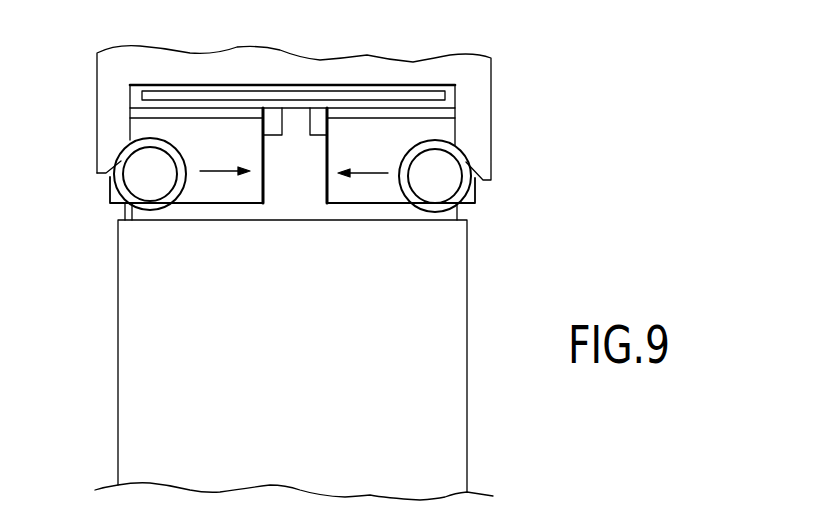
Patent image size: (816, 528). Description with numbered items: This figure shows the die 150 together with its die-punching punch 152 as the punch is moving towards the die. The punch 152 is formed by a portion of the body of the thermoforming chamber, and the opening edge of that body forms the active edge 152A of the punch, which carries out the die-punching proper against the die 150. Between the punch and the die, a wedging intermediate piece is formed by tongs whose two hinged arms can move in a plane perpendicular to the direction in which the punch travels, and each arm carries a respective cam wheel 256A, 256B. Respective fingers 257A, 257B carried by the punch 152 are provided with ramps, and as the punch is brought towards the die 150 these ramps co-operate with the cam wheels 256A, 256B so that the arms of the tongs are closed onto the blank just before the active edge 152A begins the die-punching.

The die 150 is at (430, 447).
The die-punching punch 152 is at (455, 65).
The active edge of the punch 152A is at (256, 90).
The cam wheel 256A is at (150, 172).
The cam wheel 256B is at (432, 187).
The finger 257A is at (110, 143).
The finger 257B is at (472, 152).